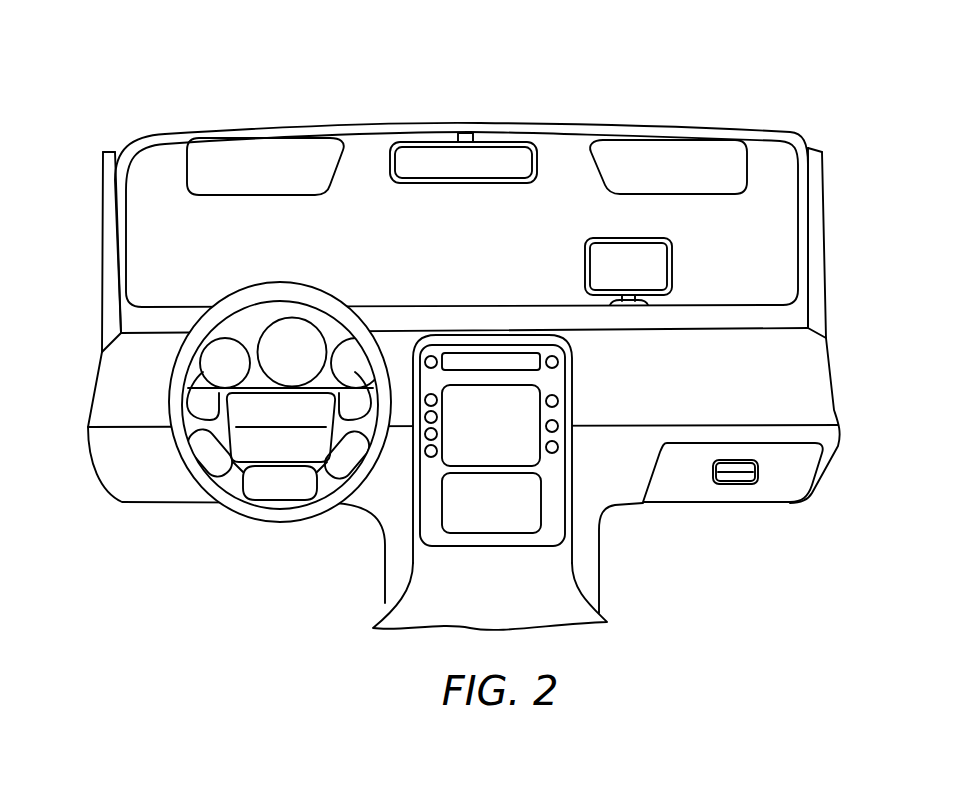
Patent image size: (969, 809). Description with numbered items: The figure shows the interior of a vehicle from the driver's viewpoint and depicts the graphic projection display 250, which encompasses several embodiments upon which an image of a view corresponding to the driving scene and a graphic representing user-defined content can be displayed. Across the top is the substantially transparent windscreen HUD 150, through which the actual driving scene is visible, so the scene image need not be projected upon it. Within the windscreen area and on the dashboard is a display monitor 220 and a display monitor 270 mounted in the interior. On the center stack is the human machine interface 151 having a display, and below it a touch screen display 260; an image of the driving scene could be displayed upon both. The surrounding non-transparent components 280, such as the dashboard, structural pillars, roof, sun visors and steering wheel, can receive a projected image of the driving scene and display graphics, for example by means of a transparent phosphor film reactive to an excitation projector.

The graphic projection display 250 is at (160, 126).
The substantially transparent windscreen HUD 150 is at (170, 199).
The non-transparent components 280 is at (283, 174).
The rear view mirror display 220 is at (480, 174).
The display monitor 270 is at (673, 250).
The human machine interface (HMI) 151 is at (540, 397).
The touch screen display 260 is at (542, 488).